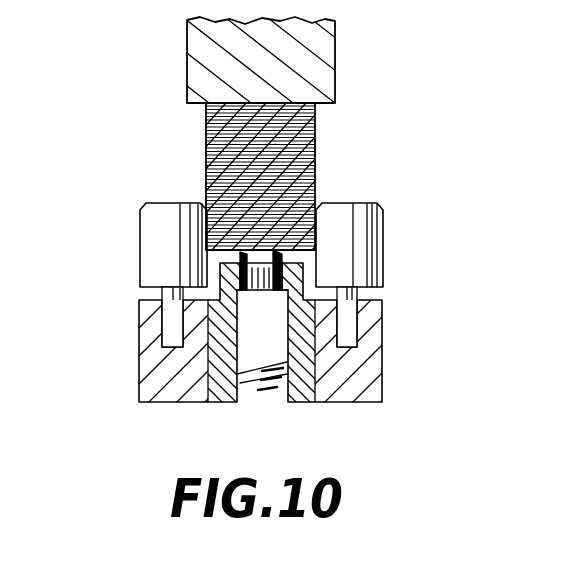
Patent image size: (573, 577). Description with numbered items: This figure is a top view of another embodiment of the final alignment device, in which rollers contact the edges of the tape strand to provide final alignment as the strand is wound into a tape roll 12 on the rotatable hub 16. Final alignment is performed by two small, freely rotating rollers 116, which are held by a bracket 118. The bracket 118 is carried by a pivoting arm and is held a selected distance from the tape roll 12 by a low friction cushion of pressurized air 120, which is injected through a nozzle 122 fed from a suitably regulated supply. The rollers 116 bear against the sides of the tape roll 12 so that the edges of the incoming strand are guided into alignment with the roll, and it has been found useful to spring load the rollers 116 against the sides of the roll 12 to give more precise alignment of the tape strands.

The rotatable hub 16 is at (330, 68).
The tape roll 12 is at (316, 148).
The freely rotating rollers 116 is at (140, 237).
The bracket 118 is at (372, 352).
The cushion of pressurized air 120 is at (226, 256).
The nozzle 122 is at (250, 377).